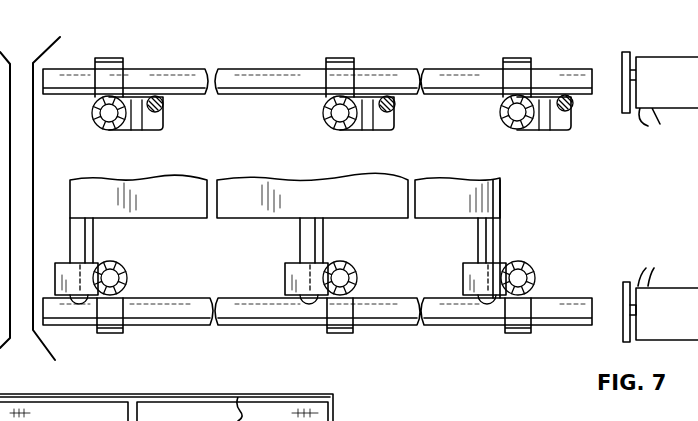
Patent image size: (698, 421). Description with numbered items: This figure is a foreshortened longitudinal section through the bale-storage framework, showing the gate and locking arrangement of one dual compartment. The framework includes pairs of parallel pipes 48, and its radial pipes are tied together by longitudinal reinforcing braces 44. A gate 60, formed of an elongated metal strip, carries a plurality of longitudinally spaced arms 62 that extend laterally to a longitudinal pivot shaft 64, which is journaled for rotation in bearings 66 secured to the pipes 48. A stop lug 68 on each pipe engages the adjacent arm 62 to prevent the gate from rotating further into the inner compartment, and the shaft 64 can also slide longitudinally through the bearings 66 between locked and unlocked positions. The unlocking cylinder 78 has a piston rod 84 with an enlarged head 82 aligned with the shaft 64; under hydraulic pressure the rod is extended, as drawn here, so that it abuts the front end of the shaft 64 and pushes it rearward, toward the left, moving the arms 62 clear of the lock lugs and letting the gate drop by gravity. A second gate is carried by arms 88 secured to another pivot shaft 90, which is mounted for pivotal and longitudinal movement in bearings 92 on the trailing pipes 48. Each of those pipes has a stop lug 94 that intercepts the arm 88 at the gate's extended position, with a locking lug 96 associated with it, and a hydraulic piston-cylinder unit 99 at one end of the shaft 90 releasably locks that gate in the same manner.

The pivot shaft 90 is at (248, 73).
The bearings 92 is at (505, 62).
The stop lug 94 is at (393, 122).
The locking lug 96 is at (361, 128).
The arms 88 is at (165, 107).
The parallel pipes 48 is at (97, 123).
The hydraulic piston-cylinder unit 99 is at (683, 65).
The gate 60 is at (443, 190).
The arms 62 is at (82, 243).
The stop lug 68 is at (288, 273).
The pivot shaft 64 is at (248, 317).
The bearings 66 is at (110, 335).
The enlarged head 82 is at (623, 290).
The piston rod 84 is at (627, 317).
The cylinder 78 is at (683, 293).
The longitudinal reinforcing braces 44 is at (215, 420).